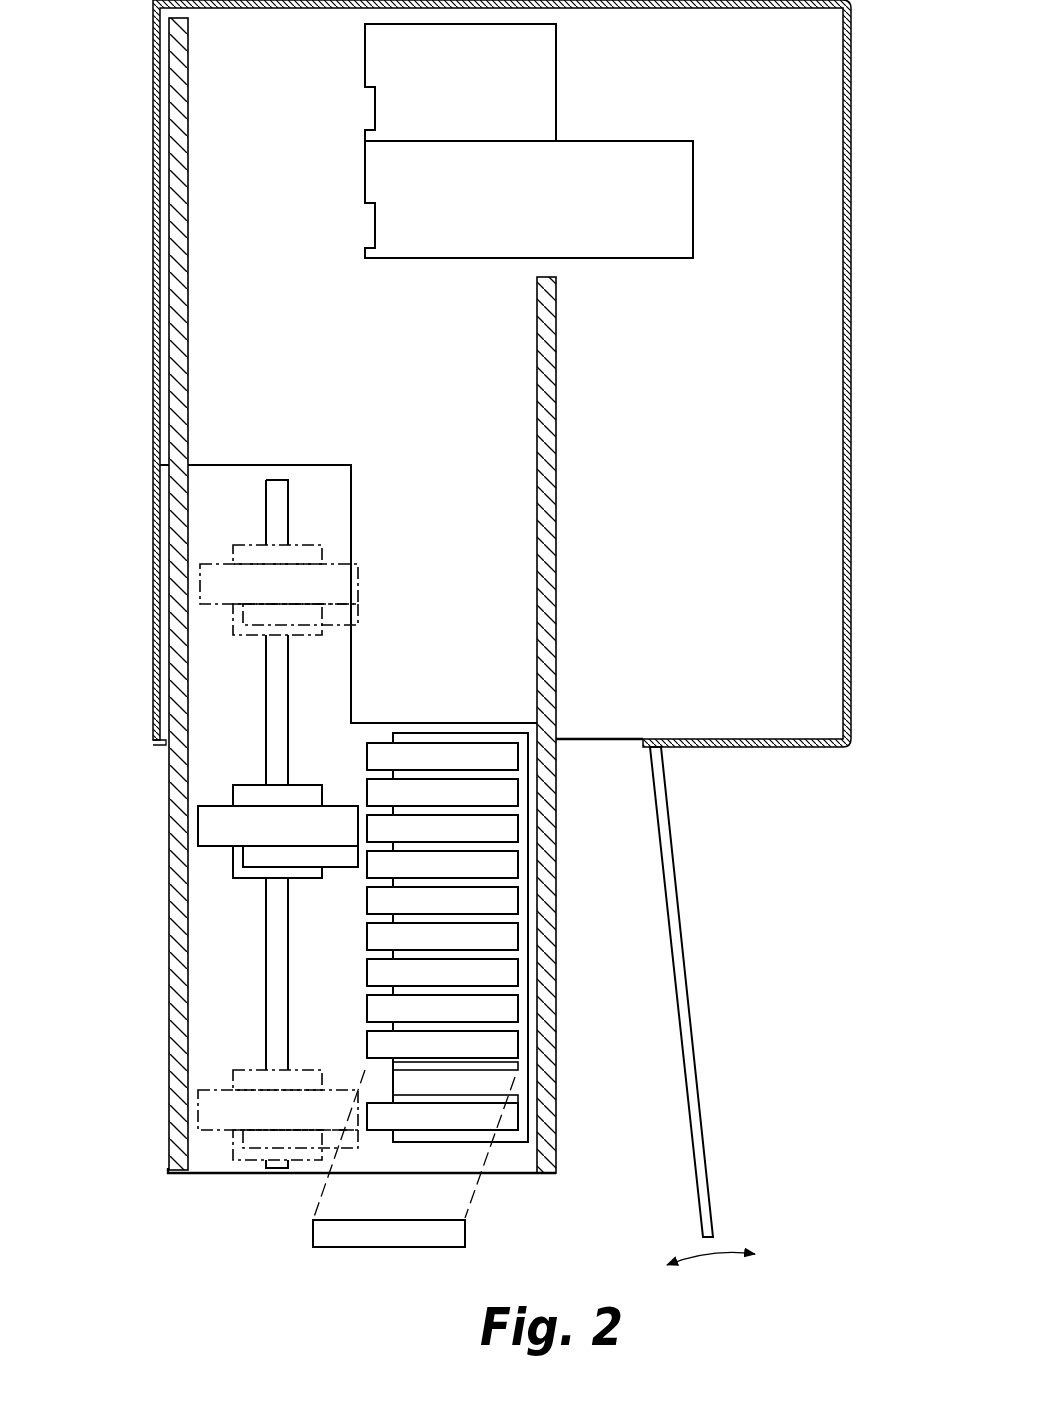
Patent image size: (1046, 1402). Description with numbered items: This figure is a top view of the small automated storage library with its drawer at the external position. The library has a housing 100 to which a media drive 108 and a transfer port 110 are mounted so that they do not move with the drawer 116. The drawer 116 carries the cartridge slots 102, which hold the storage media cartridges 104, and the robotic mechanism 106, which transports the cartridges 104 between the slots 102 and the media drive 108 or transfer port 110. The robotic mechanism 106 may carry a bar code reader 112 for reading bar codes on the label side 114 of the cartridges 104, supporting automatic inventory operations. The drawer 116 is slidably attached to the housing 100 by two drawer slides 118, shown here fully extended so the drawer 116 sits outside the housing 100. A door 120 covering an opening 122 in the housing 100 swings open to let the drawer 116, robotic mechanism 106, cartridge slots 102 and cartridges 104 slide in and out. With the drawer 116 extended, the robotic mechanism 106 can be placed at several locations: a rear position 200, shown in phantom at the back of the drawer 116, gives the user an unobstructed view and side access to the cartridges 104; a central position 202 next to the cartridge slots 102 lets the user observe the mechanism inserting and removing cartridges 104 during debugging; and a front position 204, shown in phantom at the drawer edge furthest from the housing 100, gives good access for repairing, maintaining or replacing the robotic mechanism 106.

The housing 100 is at (853, 382).
The cartridge slots 102 is at (522, 1142).
The storage media cartridges 104 is at (510, 933).
The robotic mechanism 106 is at (225, 797).
The media drive 108 is at (677, 199).
The transfer port 110 is at (537, 91).
The bar code reader 112 is at (256, 858).
The label side 114 is at (313, 1232).
The drawer 116 is at (205, 1157).
The drawer slides 118 is at (180, 1027).
The door 120 is at (705, 1162).
The opening 122 is at (606, 723).
The rear position 200 is at (135, 595).
The central position 202 is at (148, 855).
The front position 204 is at (140, 1108).